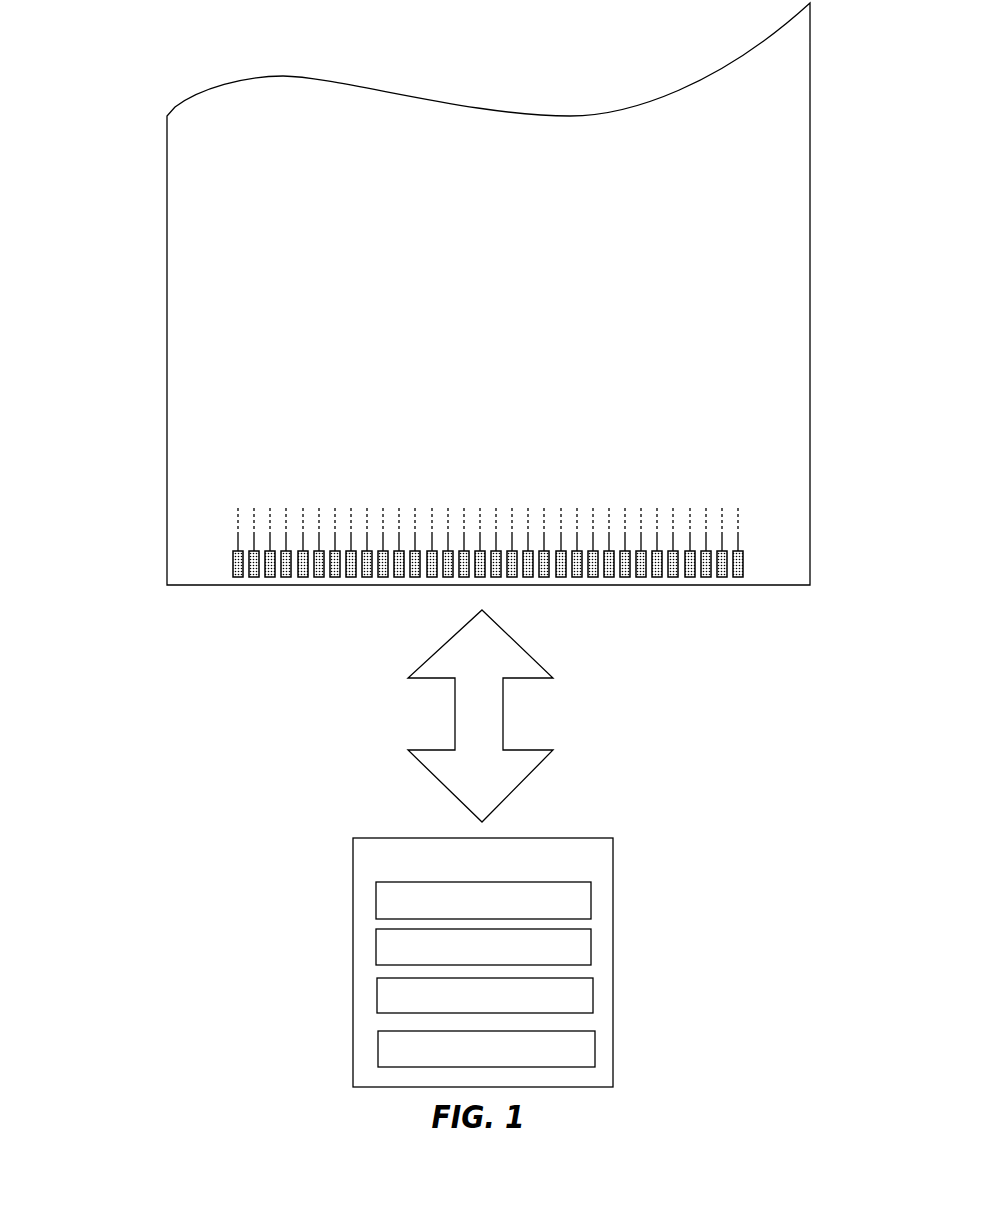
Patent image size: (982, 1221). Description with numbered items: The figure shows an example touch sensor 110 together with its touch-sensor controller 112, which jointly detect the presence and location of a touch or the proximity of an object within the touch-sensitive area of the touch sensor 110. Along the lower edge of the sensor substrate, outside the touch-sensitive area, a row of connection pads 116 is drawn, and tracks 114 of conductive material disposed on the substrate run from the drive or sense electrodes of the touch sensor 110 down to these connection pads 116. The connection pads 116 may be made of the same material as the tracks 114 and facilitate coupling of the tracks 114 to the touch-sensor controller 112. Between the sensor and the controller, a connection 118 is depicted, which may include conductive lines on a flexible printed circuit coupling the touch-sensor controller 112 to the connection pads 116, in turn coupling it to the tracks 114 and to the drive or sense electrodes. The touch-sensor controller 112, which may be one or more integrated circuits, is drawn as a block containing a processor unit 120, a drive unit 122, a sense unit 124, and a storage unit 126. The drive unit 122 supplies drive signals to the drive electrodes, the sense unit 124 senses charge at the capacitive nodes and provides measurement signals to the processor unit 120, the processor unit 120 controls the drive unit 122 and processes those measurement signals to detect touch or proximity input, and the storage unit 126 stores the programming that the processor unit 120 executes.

The touch sensor 110 is at (220, 220).
The touch-sensor controller 112 is at (401, 962).
The tracks 114 is at (237, 540).
The connection pads 116 is at (233, 561).
The connection 118 is at (455, 748).
The processor unit 120 is at (483, 900).
The drive unit 122 is at (483, 947).
The sense unit 124 is at (485, 995).
The storage unit 126 is at (486, 1049).